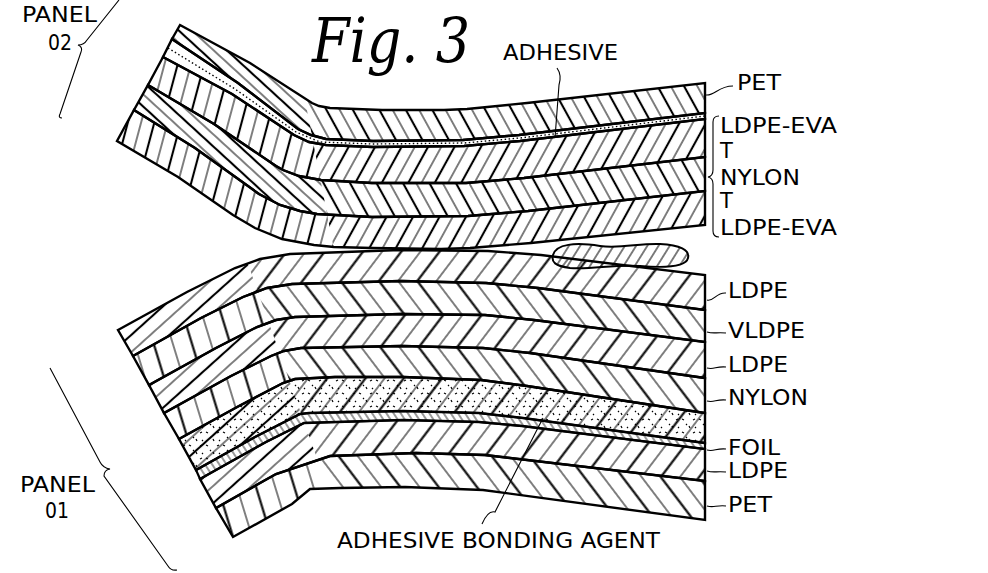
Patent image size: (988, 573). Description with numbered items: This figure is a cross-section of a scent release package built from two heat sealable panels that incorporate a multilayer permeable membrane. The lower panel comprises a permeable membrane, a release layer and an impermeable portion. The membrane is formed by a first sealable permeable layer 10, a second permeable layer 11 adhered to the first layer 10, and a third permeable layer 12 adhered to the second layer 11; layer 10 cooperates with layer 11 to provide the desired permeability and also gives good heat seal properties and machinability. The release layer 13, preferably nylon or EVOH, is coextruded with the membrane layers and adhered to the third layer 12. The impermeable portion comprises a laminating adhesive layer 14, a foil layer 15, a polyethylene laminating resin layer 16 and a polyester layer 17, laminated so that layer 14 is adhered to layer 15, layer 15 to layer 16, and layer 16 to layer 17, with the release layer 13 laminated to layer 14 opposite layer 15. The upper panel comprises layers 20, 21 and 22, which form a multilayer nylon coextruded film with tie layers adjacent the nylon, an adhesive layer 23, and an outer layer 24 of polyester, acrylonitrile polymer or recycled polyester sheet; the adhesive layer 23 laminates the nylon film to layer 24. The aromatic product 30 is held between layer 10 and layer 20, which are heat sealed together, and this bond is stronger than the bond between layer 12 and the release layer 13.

The first sealable permeable layer 10 is at (128, 349).
The second permeable layer 11 is at (146, 387).
The third permeable layer 12 is at (157, 403).
The release layer 13 is at (176, 438).
The laminating adhesive layer 14 is at (195, 459).
The foil layer 15 is at (205, 479).
The polyethylene laminating resin layer 16 is at (213, 501).
The polyester layer 17 is at (226, 532).
The layer of nylon coextruded film 20 is at (126, 122).
The layer of nylon coextruded film 21 is at (143, 96).
The layer of nylon coextruded film 22 is at (158, 73).
The adhesive layer 23 is at (165, 49).
The polyester layer 24 is at (176, 31).
The aromatic product 30 is at (690, 258).